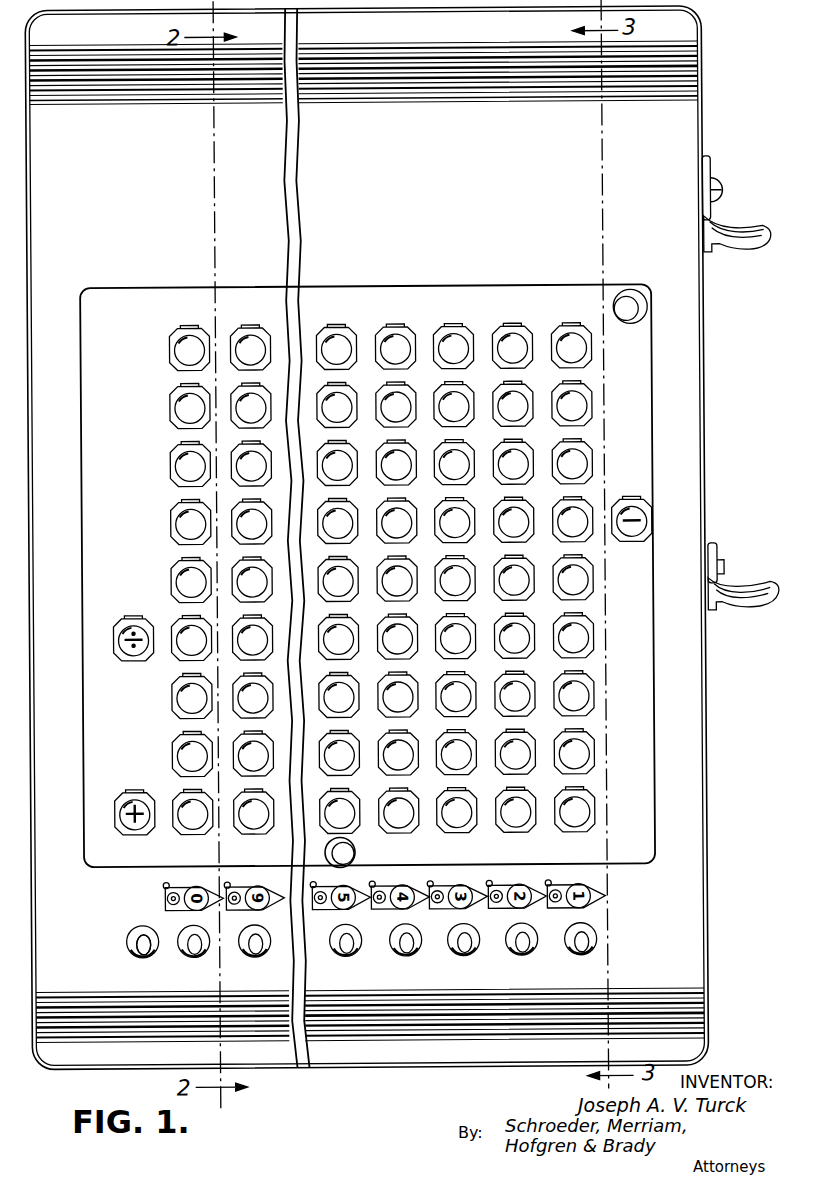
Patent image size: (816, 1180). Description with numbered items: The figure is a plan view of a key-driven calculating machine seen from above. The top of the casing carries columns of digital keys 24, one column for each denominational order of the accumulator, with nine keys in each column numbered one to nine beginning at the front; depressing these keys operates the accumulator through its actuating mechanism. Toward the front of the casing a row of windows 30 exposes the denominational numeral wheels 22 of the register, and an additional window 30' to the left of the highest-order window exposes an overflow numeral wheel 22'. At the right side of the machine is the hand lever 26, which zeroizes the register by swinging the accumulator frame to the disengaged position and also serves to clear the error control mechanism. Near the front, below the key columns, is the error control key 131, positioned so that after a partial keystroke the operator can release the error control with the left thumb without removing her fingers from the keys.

The digital keys 24 is at (591, 405).
The error control key 131 is at (353, 851).
The denominational numeral wheels 22 is at (522, 952).
The overflow numeral wheel 22' is at (121, 930).
The windows 30 is at (376, 953).
The additional window 30' is at (106, 956).
The hand lever 26 is at (752, 612).